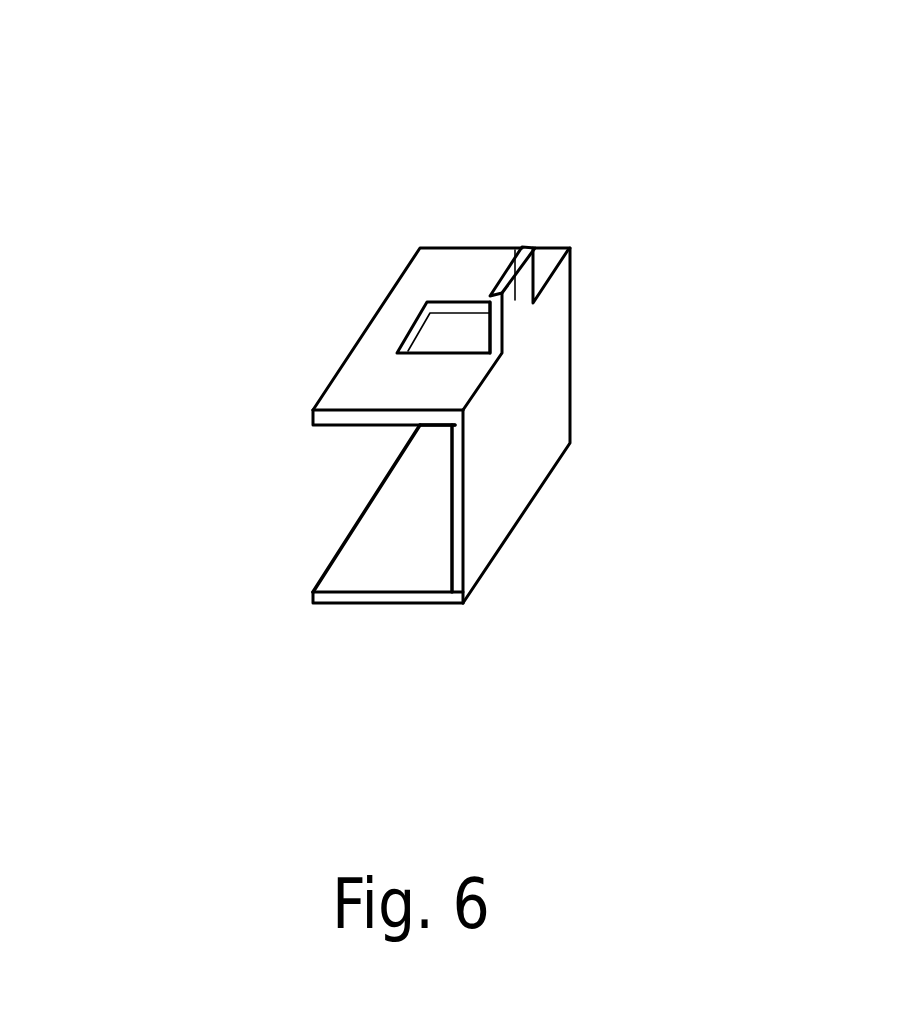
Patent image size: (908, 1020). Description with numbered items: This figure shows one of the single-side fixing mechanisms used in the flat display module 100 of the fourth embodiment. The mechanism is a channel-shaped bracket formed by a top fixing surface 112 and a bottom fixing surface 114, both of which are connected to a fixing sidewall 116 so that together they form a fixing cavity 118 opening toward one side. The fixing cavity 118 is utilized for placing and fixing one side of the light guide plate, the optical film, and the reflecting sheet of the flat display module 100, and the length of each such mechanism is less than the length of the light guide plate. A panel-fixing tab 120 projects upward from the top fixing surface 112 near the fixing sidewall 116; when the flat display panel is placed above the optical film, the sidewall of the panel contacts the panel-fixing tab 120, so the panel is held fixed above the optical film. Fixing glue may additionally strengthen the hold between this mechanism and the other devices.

The flat display module 100 is at (641, 139).
The top fixing surface 112 is at (360, 382).
The bottom fixing surface 114 is at (338, 595).
The fixing sidewall 116 is at (562, 393).
The fixing cavity 118 is at (322, 508).
The panel-fixing tab 120 is at (513, 255).